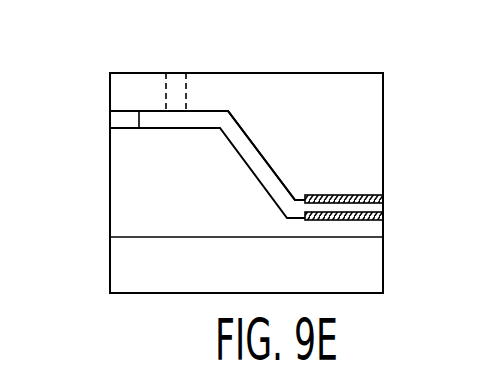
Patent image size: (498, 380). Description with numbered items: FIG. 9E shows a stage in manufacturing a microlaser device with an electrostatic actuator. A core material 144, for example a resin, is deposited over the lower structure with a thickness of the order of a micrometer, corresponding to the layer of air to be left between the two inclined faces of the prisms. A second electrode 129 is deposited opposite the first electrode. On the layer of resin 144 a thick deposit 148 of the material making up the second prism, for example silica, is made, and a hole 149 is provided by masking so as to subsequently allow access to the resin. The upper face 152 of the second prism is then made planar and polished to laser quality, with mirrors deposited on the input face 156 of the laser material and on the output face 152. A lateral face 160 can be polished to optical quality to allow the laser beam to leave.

The upper face 152 is at (353, 73).
The input face 156 is at (152, 293).
The thick deposit 148 is at (293, 122).
The core material 144 is at (248, 148).
The lateral face 160 is at (110, 143).
The hole 149 is at (187, 97).
The second electrode 129 is at (341, 194).